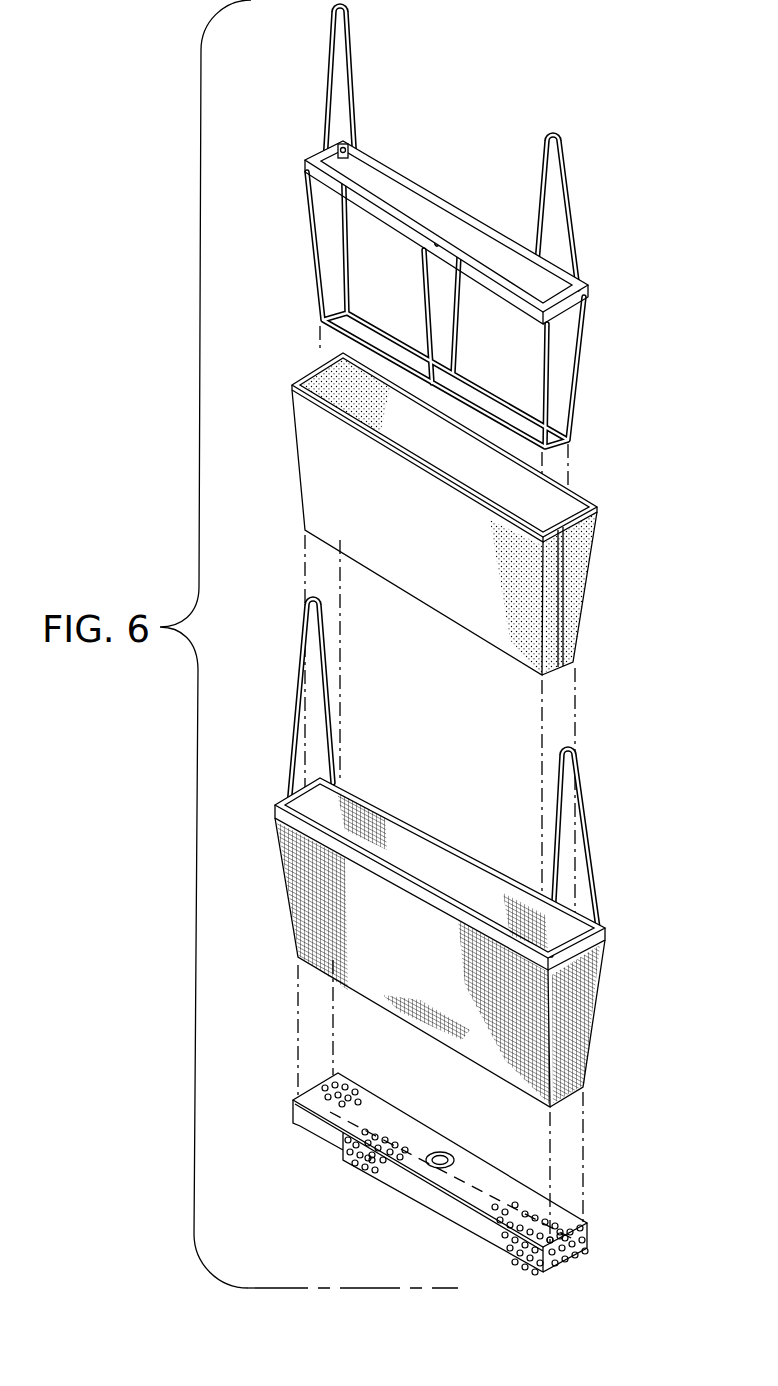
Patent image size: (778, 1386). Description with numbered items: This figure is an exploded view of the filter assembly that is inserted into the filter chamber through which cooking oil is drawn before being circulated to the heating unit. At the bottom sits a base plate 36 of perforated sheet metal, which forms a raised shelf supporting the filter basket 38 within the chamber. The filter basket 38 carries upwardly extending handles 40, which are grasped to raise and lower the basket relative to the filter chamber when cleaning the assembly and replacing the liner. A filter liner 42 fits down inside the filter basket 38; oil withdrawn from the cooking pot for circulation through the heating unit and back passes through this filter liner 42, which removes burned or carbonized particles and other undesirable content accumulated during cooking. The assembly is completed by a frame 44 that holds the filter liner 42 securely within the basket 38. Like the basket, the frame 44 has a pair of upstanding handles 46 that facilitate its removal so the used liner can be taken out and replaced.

The base plate 36 is at (390, 1127).
The filter basket 38 is at (398, 815).
The handles 40 is at (338, 723).
The filter liner 42 is at (578, 573).
The frame 44 is at (425, 200).
The upstanding handles 46 is at (352, 68).